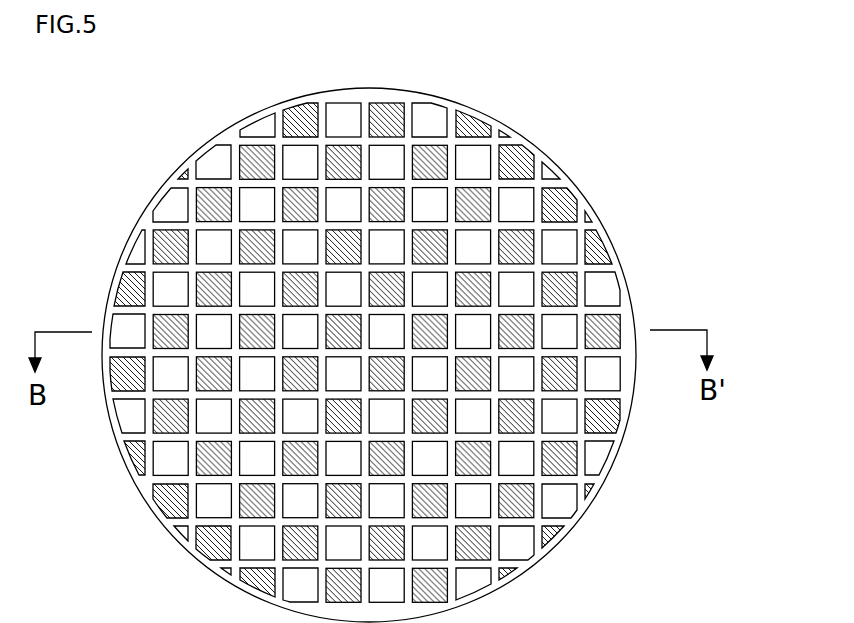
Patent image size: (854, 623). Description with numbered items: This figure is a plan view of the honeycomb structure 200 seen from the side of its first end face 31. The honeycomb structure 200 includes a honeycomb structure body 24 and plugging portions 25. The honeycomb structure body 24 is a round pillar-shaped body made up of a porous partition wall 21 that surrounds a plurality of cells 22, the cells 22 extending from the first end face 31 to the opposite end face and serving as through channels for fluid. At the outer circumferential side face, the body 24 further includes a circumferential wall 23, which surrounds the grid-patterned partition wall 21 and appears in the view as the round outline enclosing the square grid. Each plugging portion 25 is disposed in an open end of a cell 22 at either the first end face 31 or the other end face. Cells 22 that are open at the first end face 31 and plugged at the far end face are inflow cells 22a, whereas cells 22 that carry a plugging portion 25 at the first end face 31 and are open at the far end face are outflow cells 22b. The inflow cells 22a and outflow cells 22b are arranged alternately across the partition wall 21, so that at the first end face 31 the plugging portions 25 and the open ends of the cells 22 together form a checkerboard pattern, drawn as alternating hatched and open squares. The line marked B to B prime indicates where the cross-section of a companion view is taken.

The honeycomb structure 200 is at (700, 56).
The partition wall 21 is at (472, 183).
The cells 22 is at (613, 197).
The inflow cells 22a is at (517, 203).
The outflow cells 22b is at (513, 248).
The circumferential wall 23 is at (580, 517).
The honeycomb structure body 24 is at (648, 300).
The plugging portion 25 is at (436, 169).
The first end face 31 is at (177, 147).